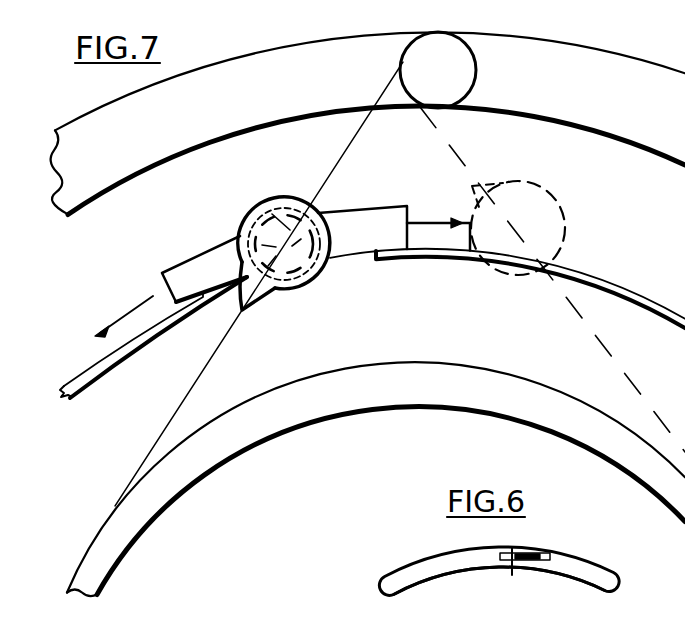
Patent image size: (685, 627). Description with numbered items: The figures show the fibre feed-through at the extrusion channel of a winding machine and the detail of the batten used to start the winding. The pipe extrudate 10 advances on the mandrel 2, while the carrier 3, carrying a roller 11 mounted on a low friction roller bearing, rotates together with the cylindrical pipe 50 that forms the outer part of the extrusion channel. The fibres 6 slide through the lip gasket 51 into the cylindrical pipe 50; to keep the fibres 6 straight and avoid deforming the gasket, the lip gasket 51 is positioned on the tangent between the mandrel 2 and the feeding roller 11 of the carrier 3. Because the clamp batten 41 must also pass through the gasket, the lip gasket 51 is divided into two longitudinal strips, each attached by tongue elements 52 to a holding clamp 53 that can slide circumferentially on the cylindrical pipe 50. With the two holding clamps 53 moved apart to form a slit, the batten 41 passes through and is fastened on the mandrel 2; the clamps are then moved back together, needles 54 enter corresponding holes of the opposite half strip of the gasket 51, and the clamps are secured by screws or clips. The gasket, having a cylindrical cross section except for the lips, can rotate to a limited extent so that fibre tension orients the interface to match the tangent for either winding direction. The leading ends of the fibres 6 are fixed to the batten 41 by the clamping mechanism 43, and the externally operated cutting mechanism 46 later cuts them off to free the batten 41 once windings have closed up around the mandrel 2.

In FIG. 7, the mandrel 2 is at (450, 408).
In FIG. 7, the carrier 3 is at (185, 128).
In FIG. 7, the fibres 6 is at (186, 398).
In FIG. 6, the fibres 6 is at (500, 549).
In FIG. 7, the pipe extrudate 10 is at (373, 370).
In FIG. 7, the rollers 11 is at (455, 36).
In FIG. 6, the clamp batten 41 is at (438, 571).
In FIG. 6, the clamping mechanism 43 is at (522, 562).
In FIG. 6, the cutting mechanism 46 is at (540, 555).
In FIG. 7, the cylindrical pipe 50 is at (98, 366).
In FIG. 7, the lip gasket 51 is at (270, 200).
In FIG. 7, the tongue elements 52 is at (243, 226).
In FIG. 7, the holding clamp 53 is at (193, 266).
In FIG. 7, the needles 54 is at (306, 203).